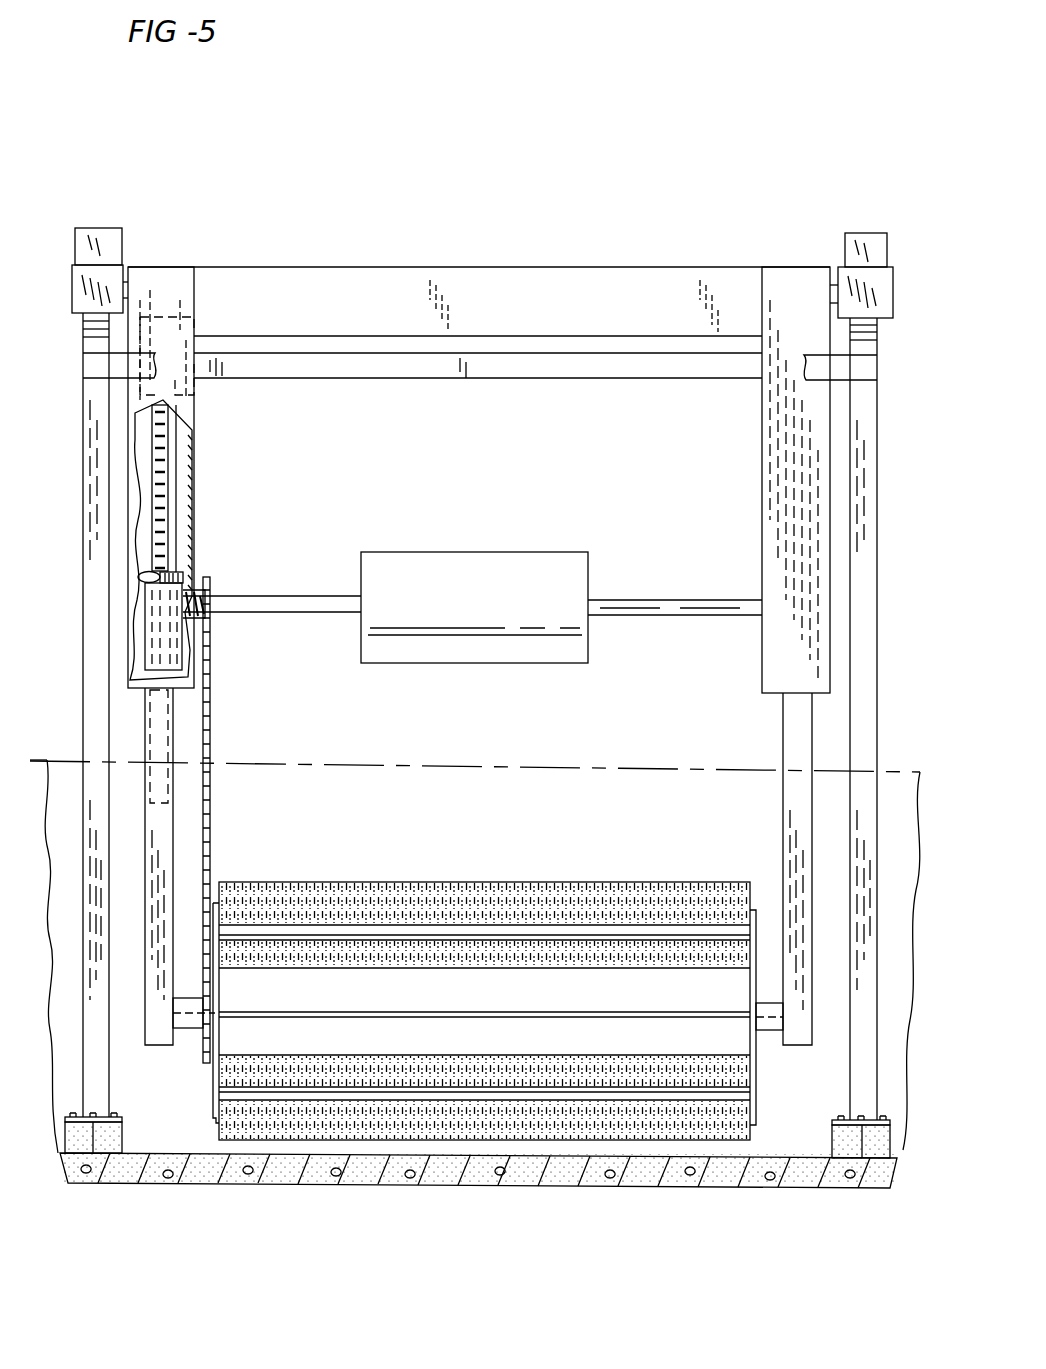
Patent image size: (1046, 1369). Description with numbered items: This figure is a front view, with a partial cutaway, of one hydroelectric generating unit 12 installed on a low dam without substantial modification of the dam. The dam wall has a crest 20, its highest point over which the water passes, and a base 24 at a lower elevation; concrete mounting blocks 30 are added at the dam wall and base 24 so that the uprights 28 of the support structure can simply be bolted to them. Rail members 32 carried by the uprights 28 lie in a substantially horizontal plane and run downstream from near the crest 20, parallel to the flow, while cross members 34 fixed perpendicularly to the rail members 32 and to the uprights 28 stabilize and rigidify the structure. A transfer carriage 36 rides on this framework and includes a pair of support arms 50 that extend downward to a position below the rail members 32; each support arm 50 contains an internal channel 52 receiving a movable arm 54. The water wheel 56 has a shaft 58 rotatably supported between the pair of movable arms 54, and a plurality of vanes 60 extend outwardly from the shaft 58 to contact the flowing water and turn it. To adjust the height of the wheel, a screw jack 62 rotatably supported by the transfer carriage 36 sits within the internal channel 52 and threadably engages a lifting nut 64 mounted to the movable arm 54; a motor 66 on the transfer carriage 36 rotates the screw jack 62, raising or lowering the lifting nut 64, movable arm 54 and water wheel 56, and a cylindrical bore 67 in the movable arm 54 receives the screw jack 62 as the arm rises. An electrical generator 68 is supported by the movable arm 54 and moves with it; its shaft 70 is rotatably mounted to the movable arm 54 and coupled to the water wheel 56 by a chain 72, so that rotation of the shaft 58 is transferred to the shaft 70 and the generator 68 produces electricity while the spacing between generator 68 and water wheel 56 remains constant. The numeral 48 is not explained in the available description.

The hydroelectric generating unit 12 is at (563, 246).
The crest 20 is at (395, 765).
The base 24 is at (455, 1184).
The uprights 28 is at (895, 818).
The concrete mounting blocks 30 is at (121, 1135).
The rail members 32 is at (95, 334).
The cross members 34 is at (96, 366).
The transfer carriage 36 is at (386, 270).
The mounting caps 48 is at (128, 236).
The support arm 50 is at (196, 398).
The internal channel 52 is at (193, 438).
The movable arm 54 is at (166, 893).
The water wheel 56 is at (613, 885).
The shaft 58 is at (183, 1016).
The vanes 60 is at (401, 882).
The screw jack 62 is at (160, 480).
The lifting nut 64 is at (184, 575).
The motor 66 is at (206, 318).
The cylindrical bore 67 is at (158, 770).
The electrical generator 68 is at (544, 664).
The shaft 70 is at (311, 600).
The chain 72 is at (211, 800).